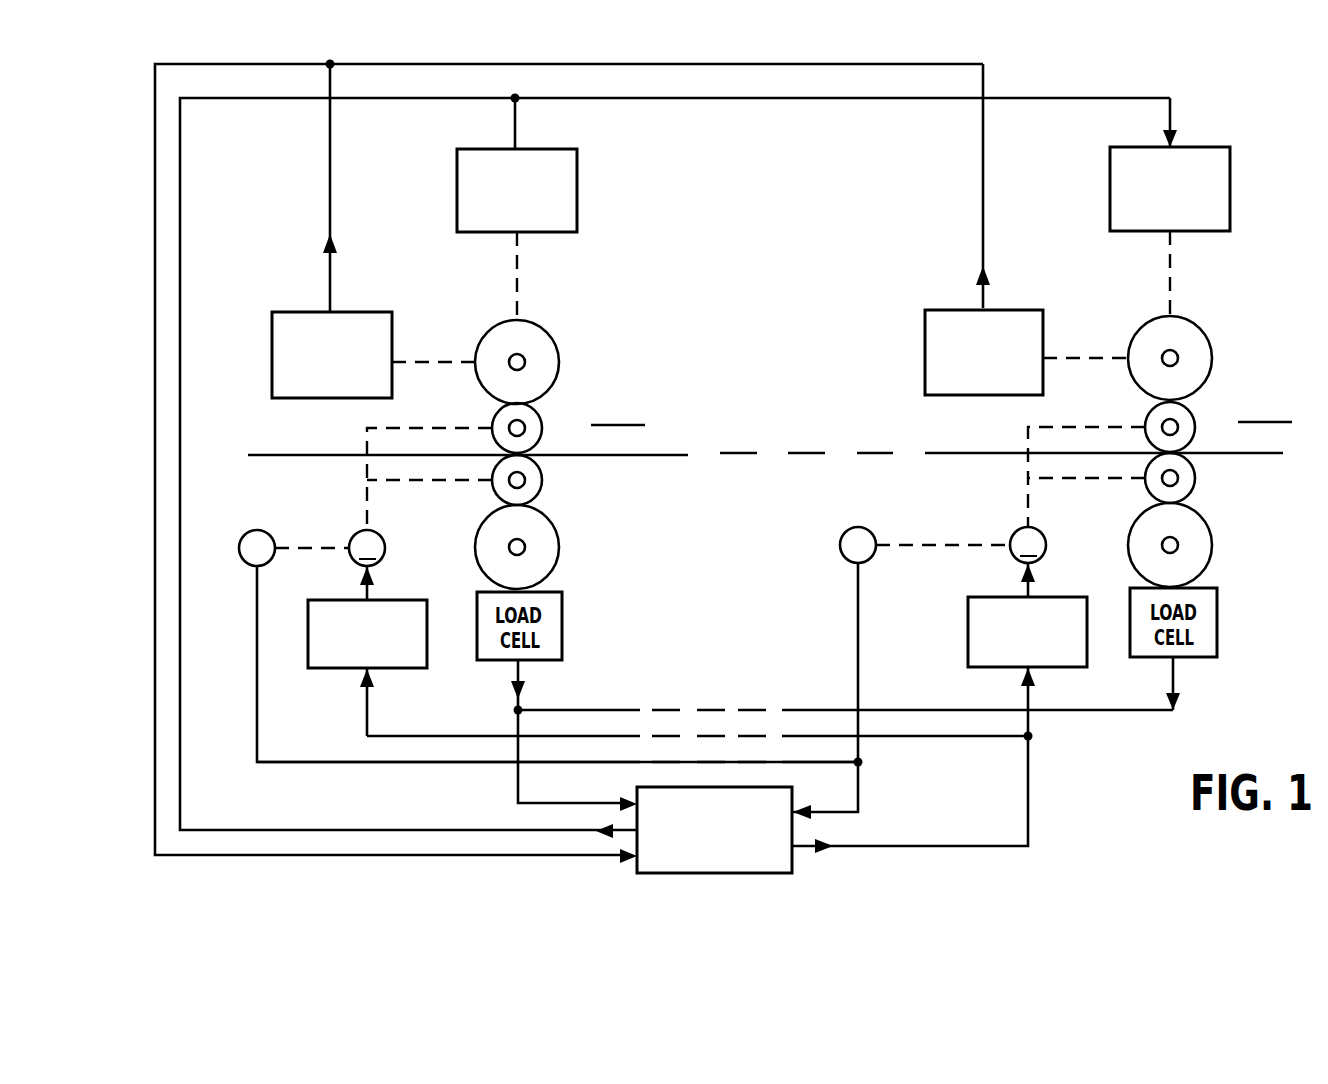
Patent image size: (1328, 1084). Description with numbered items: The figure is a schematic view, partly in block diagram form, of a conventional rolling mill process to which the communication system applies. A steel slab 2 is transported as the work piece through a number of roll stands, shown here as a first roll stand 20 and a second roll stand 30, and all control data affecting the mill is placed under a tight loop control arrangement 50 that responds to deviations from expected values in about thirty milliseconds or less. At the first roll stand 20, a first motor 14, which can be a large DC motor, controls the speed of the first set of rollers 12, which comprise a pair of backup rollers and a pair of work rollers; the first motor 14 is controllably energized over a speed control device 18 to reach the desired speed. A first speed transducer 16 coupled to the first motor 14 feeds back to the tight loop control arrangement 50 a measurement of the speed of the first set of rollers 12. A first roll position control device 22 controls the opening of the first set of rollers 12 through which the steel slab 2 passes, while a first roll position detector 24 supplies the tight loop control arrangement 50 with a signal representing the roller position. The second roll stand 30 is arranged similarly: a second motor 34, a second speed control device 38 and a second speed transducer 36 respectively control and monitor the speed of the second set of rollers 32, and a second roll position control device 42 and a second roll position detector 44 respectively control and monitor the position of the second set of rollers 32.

The steel slab 2 is at (657, 455).
The first set of rollers 12 is at (600, 350).
The first motor 14 is at (381, 536).
The first speed transducer 16 is at (247, 532).
The speed control device 18 is at (333, 670).
The first roll stand 20 is at (568, 511).
The first roll position control device 22 is at (577, 187).
The first roll position detector 24 is at (297, 310).
The second roll stand 30 is at (1223, 511).
The second set of rollers 32 is at (1250, 332).
The second motor 34 is at (1016, 532).
The second speed transducer 36 is at (841, 537).
The second speed control device 38 is at (968, 617).
The second roll position control device 42 is at (1020, 308).
The second roll position detector 44 is at (1230, 176).
The tight loop control arrangement 50 is at (793, 800).